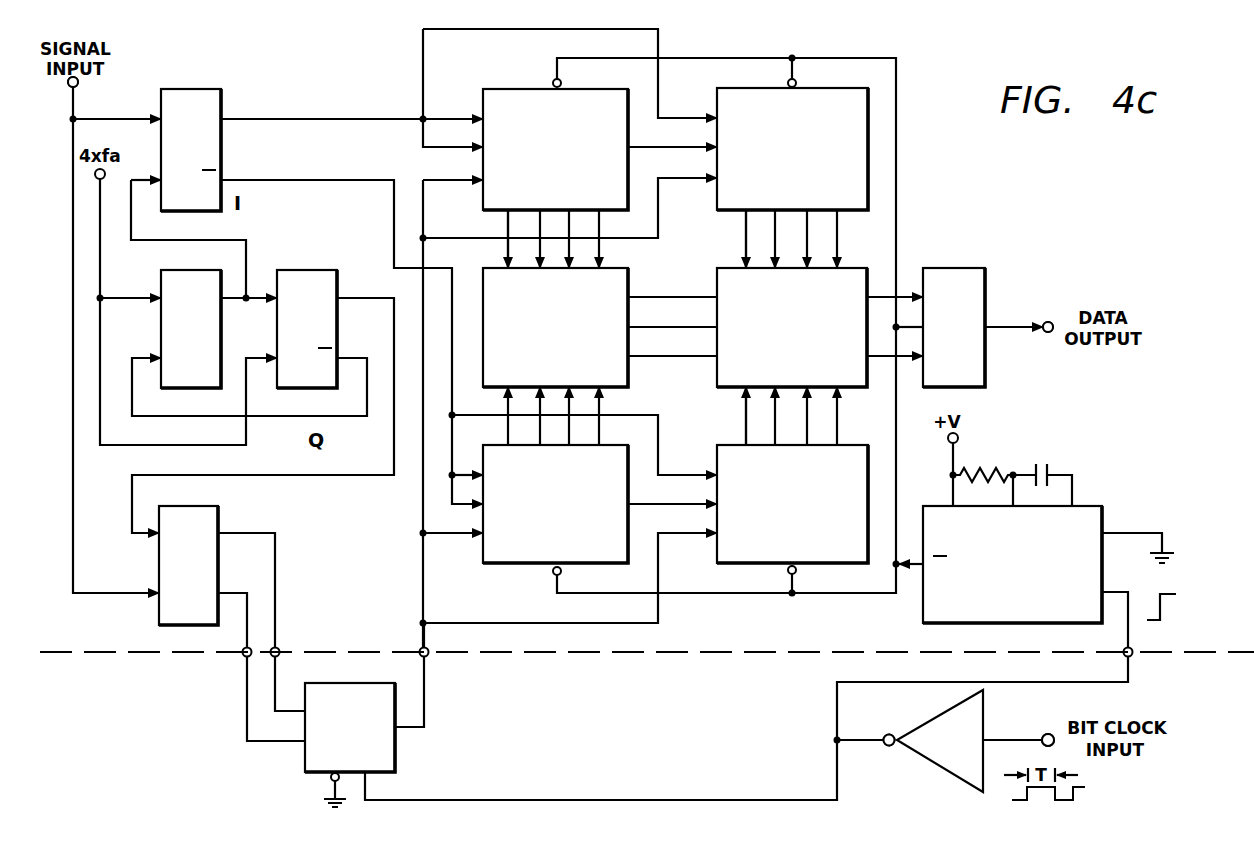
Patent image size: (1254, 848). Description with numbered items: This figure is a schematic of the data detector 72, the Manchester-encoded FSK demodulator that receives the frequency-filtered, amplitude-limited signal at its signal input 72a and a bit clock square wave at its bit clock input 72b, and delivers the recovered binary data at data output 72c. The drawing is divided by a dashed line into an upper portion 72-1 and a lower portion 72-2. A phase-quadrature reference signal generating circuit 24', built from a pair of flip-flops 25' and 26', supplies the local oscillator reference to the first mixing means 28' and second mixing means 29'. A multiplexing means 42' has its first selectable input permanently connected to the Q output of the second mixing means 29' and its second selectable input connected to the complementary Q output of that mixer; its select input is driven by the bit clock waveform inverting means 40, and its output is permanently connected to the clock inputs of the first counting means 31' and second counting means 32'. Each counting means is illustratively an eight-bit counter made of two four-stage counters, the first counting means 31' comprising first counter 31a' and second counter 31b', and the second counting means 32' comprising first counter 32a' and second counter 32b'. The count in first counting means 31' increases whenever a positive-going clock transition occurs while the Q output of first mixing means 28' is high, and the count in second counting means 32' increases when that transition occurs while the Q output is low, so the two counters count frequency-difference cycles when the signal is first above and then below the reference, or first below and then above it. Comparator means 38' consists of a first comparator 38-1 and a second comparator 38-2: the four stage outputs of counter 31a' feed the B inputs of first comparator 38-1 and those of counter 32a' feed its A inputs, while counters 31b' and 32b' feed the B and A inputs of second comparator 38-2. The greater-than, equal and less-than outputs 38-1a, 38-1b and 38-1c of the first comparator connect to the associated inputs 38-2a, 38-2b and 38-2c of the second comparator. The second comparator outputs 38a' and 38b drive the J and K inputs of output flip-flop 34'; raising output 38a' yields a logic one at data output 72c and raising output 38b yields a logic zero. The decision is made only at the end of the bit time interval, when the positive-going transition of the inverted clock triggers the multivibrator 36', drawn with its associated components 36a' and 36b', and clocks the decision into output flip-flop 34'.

The signal input 72a is at (79, 81).
The first mixing means 28' is at (230, 138).
The phase-quadrature reference signal generating circuit 24' is at (274, 293).
The flip-flop 25' is at (212, 329).
The flip-flop 26' is at (332, 329).
The second mixing means 29' is at (219, 557).
The first counting means 31' is at (712, 155).
The first counter of first counting means 31a' is at (532, 155).
The second counter of first counting means 31b' is at (765, 165).
The second counting means 32' is at (651, 517).
The first counter of second counting means 32a' is at (531, 497).
The second counter of second counting means 32b' is at (765, 518).
The comparator means 38' is at (705, 321).
The first comparator 38-1 is at (482, 297).
The second comparator 38-2 is at (845, 390).
The greater-than output of first comparator 38-1a is at (630, 280).
The equal output of first comparator 38-1b is at (633, 297).
The less-than output of first comparator 38-1c is at (632, 360).
The greater-than cascade input of second comparator 38-2a is at (705, 266).
The equal cascade input of second comparator 38-2b is at (714, 324).
The less-than cascade input of second comparator 38-2c is at (712, 360).
The second comparator greater-than output 38a' is at (887, 256).
The second comparator less-than output 38b is at (873, 360).
The output flip-flop 34' is at (992, 322).
The data output 72c is at (1048, 335).
The multivibrator 36' is at (975, 570).
The timing resistor 36a' is at (990, 459).
The timing capacitor 36b' is at (1067, 459).
The bit clock waveform inverting means 40 is at (912, 755).
The bit clock input 72b is at (1045, 734).
The multiplexing means 42' is at (381, 733).
The data detector 72 is at (598, 664).
The first circuit portion 72-1 is at (374, 613).
The second circuit portion 72-2 is at (608, 744).